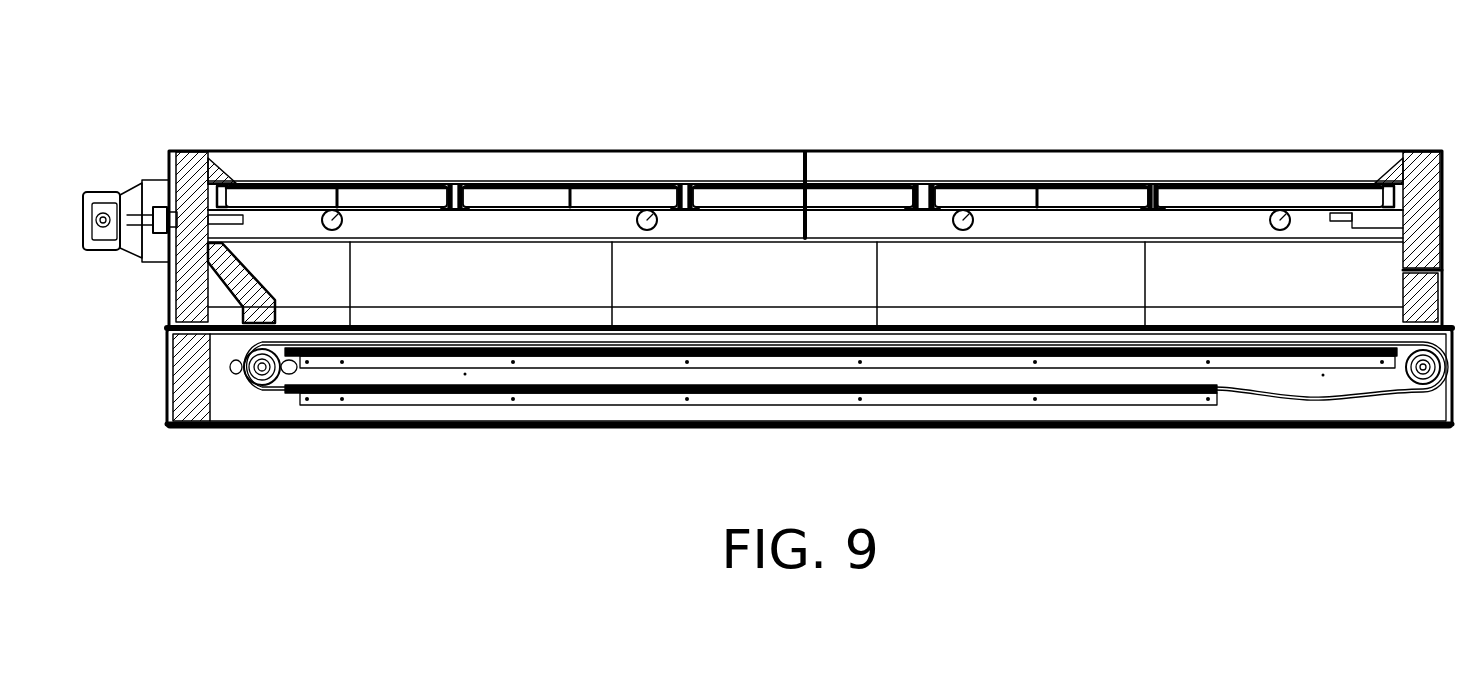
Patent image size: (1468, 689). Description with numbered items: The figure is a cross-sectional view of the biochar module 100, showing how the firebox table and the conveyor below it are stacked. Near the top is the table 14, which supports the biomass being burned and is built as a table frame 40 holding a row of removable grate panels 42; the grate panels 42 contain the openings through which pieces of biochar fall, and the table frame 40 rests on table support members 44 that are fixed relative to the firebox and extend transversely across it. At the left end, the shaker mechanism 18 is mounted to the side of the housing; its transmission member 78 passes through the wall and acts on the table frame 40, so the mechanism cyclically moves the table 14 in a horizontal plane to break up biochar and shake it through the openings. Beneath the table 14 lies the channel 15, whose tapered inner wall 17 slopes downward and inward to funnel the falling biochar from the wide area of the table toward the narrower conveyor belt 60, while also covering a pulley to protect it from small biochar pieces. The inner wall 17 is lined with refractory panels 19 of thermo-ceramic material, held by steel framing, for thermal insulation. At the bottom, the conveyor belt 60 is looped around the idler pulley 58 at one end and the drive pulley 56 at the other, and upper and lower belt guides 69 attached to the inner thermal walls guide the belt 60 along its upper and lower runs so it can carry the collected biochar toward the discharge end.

The biochar module 100 is at (1034, 82).
The table 14 is at (545, 170).
The channel 15 is at (893, 235).
The tapered inner wall 17 is at (712, 275).
The shaker mechanism 18 is at (123, 176).
The refractory panels 19 is at (238, 265).
The table frame 40 is at (216, 190).
The grate panels 42 is at (352, 192).
The table support members 44 is at (331, 210).
The drive pulley 56 is at (1425, 370).
The idler pulley 58 is at (262, 385).
The conveyor belt 60 is at (1303, 402).
The belt guides 69 is at (547, 362).
The transmission member 78 is at (232, 220).